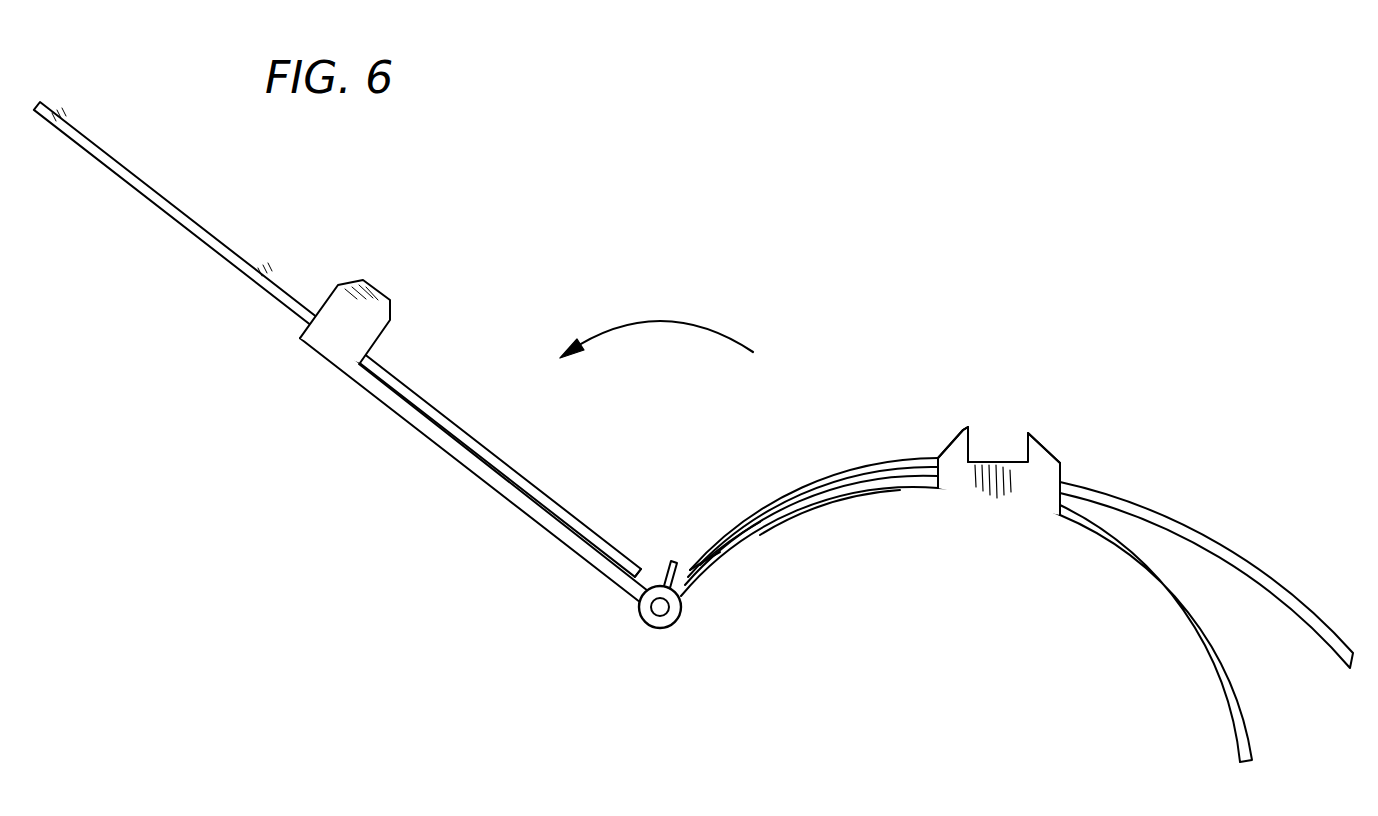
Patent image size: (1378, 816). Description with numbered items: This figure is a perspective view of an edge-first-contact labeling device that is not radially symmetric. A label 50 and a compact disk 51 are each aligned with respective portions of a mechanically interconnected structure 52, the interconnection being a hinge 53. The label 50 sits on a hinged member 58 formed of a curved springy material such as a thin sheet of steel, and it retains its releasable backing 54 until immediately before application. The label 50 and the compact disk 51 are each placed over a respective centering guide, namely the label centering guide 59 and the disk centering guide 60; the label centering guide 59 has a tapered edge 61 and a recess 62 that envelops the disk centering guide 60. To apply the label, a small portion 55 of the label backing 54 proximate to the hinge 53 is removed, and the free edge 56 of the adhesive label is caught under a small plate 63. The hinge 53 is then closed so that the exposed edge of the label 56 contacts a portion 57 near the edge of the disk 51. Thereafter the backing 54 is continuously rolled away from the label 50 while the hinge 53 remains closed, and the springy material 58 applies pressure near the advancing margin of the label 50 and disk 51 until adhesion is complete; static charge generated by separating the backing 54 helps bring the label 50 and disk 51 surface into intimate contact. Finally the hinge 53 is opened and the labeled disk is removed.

The label 50 is at (720, 527).
The compact disk 51 is at (103, 143).
The mechanically interconnected structure 52 is at (445, 450).
The hinge 53 is at (640, 608).
The releasable backing 54 is at (870, 462).
The small portion of the label backing 55 is at (720, 517).
The edge of the adhesive label 56 is at (700, 565).
The portion near the edge of the disk 57 is at (611, 543).
The hinged member 58 is at (832, 497).
The label centering guide 59 is at (964, 434).
The disk centering guide 60 is at (334, 293).
The tapered edge 61 is at (961, 430).
The recess 62 is at (997, 460).
The small plate 63 is at (641, 564).